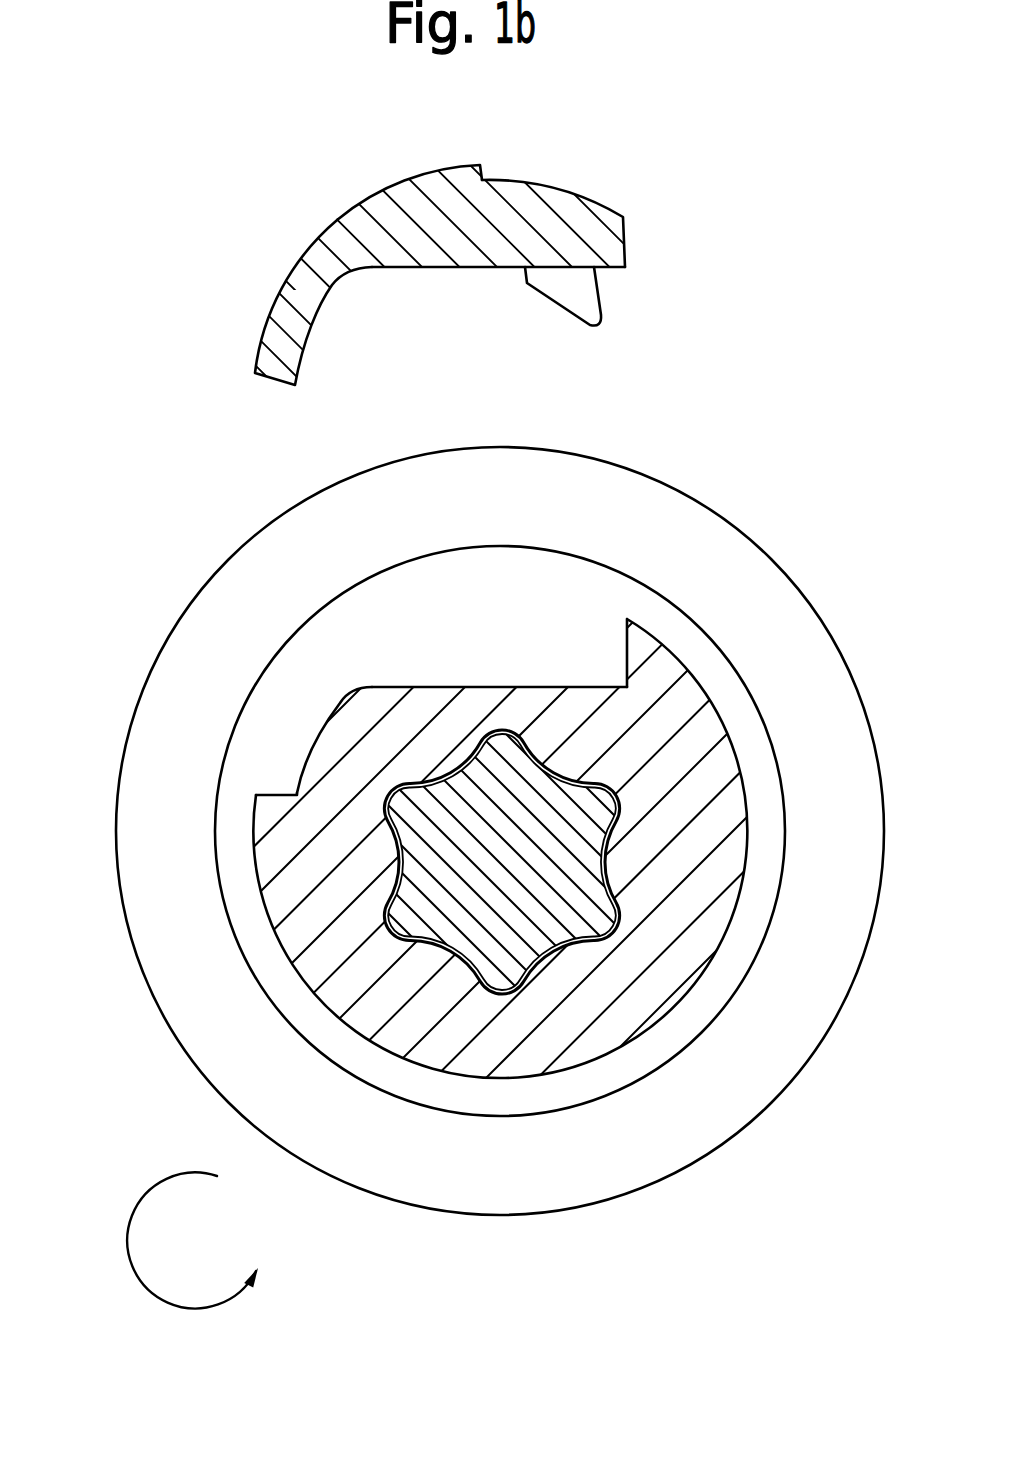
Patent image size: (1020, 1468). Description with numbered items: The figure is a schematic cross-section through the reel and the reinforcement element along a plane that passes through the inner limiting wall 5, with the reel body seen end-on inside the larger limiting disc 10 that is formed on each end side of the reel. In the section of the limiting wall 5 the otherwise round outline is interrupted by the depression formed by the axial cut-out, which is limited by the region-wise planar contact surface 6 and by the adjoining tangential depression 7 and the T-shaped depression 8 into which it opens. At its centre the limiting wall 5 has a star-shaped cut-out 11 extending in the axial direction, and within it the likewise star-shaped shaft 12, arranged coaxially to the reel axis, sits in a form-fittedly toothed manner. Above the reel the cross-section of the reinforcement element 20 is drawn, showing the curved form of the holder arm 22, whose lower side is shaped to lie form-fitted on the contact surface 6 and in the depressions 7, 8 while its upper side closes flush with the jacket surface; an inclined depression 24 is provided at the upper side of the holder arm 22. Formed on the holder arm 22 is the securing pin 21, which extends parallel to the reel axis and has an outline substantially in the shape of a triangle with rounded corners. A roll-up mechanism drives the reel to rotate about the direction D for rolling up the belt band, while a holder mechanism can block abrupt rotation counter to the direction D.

The inner limiting wall 5 is at (510, 910).
The contact surface 6 is at (551, 687).
The depression 7 is at (324, 723).
The T-shaped depression 8 is at (299, 783).
The limiting disc 10 is at (242, 582).
The star-shaped cut-out 11 is at (606, 858).
The shaft 12 is at (565, 903).
The reinforcement element 20 is at (465, 247).
The securing pin 21 is at (583, 302).
The holder arm 22 is at (343, 243).
The depression 24 is at (580, 193).
The direction of rotation D is at (128, 1265).